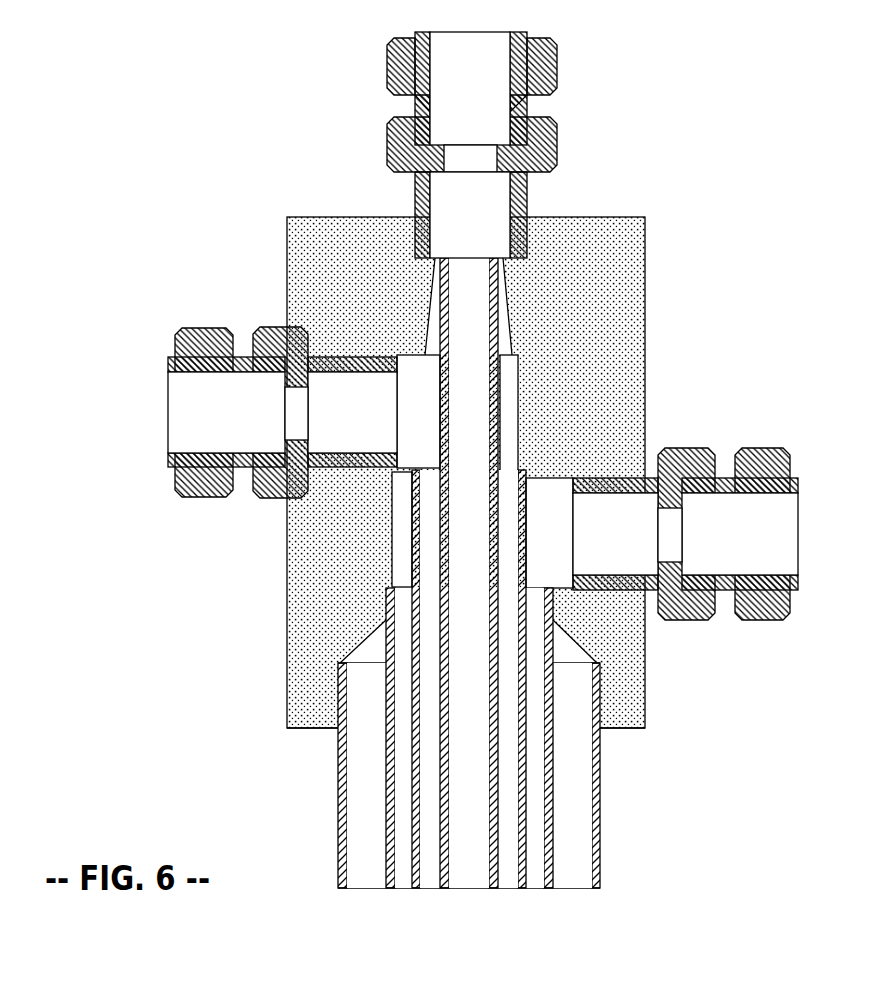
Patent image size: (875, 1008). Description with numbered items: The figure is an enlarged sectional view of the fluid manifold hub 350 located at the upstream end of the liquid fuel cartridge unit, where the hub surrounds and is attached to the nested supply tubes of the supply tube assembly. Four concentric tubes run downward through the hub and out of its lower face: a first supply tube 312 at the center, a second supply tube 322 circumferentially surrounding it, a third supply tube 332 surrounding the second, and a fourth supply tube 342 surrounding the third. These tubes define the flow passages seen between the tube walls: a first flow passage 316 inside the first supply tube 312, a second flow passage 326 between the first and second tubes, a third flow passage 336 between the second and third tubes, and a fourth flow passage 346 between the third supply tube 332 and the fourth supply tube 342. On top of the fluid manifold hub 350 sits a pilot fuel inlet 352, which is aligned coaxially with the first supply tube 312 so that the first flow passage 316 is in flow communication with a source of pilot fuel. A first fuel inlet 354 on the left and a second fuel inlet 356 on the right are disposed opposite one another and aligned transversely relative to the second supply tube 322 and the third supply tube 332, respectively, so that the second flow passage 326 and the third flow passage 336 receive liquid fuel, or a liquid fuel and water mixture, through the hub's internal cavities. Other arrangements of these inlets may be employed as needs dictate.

The first supply tube 312 is at (500, 378).
The first flow passage 316 is at (470, 430).
The second supply tube 322 is at (412, 490).
The second flow passage 326 is at (432, 530).
The third supply tube 332 is at (386, 760).
The third flow passage 336 is at (403, 808).
The fourth supply tube 342 is at (603, 785).
The fourth flow passage 346 is at (577, 852).
The fluid manifold hub 350 is at (646, 230).
The pilot fuel inlet 352 is at (389, 52).
The first fuel inlet 354 is at (192, 328).
The second fuel inlet 356 is at (792, 458).